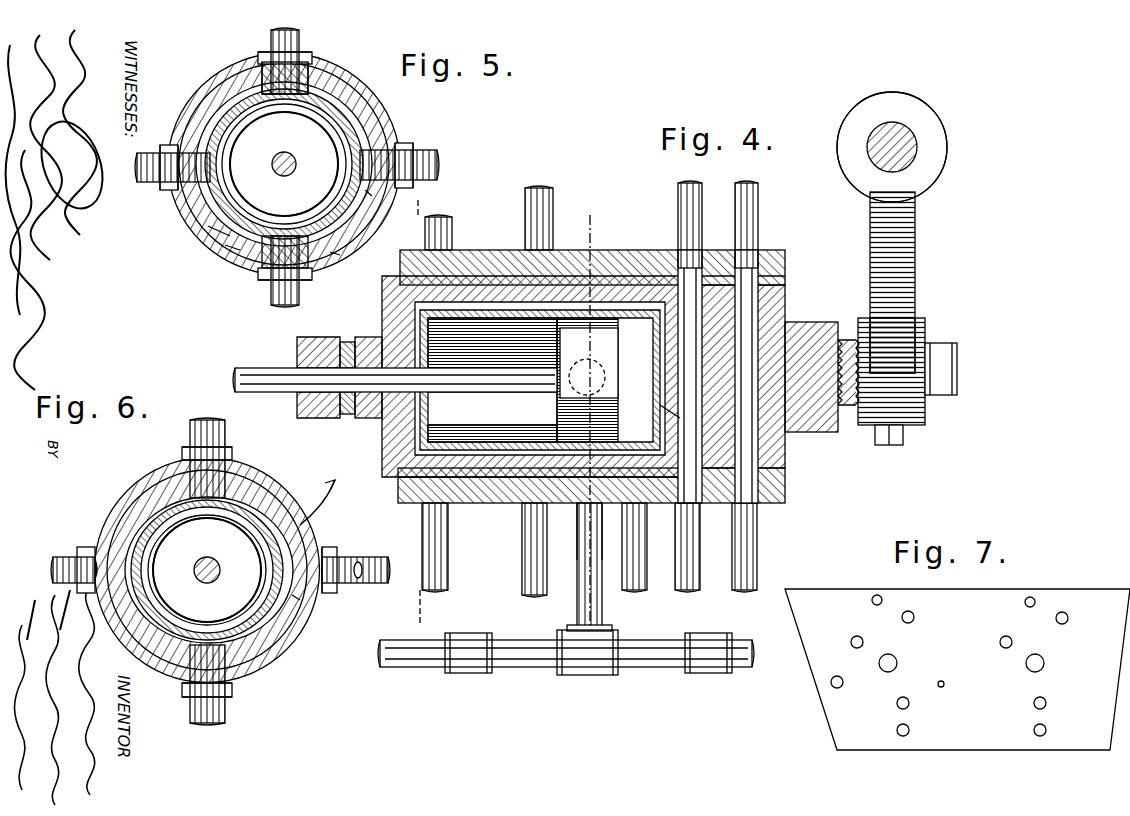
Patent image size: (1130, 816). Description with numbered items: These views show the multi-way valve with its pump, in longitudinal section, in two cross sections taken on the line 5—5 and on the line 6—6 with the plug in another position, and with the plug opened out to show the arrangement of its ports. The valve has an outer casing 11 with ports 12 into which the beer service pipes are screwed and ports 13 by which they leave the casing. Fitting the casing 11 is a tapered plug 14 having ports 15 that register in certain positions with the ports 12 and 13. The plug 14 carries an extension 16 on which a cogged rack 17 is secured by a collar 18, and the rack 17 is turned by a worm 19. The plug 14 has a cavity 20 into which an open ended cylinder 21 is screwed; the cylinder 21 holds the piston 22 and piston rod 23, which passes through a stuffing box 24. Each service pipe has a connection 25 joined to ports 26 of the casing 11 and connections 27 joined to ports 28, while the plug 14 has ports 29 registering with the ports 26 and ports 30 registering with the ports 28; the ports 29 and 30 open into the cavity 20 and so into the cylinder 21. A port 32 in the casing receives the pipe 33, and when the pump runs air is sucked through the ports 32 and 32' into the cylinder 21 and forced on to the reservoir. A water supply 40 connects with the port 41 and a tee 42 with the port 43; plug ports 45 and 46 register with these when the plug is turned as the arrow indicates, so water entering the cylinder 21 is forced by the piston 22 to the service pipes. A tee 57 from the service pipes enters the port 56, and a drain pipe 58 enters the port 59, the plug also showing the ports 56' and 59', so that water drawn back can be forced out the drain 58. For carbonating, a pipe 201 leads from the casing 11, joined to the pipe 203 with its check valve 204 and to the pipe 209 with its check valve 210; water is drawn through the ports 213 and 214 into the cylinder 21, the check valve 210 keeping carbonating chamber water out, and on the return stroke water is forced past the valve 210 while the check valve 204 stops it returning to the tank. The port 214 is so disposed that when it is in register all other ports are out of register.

In FIG. 4, the section line 5 is at (420, 200).
In FIG. 4, the section line 6 is at (590, 215).
In FIG. 5, the outer casing 11 is at (340, 255).
In FIG. 4, the outer casing 11 is at (780, 482).
In FIG. 6, the ports 12 is at (65, 558).
In FIG. 4, the ports 12 is at (690, 200).
In FIG. 4, the ports 13 is at (745, 258).
In FIG. 5, the tapered plug 14 is at (220, 88).
In FIG. 6, the tapered plug 14 is at (160, 490).
In FIG. 4, the tapered plug 14 is at (770, 320).
In FIG. 7, the tapered plug 14 is at (1115, 612).
In FIG. 4, the ports 15 is at (745, 300).
In FIG. 7, the ports 15 is at (912, 726).
In FIG. 4, the extension 16 is at (935, 345).
In FIG. 4, the cogged rack 17 is at (912, 292).
In FIG. 4, the collar 18 is at (905, 432).
In FIG. 4, the worm 19 is at (885, 100).
In FIG. 5, the cavity 20 is at (225, 245).
In FIG. 4, the cavity 20 is at (475, 408).
In FIG. 4, the open ended cylinder 21 is at (505, 445).
In FIG. 5, the piston 22 is at (285, 180).
In FIG. 6, the piston 22 is at (208, 586).
In FIG. 4, the piston 22 is at (592, 362).
In FIG. 5, the piston rod 23 is at (287, 152).
In FIG. 6, the piston rod 23 is at (208, 557).
In FIG. 4, the piston rod 23 is at (452, 390).
In FIG. 4, the stuffing box 24 is at (318, 340).
In FIG. 5, the connection 25 is at (165, 178).
In FIG. 4, the connection 25 is at (525, 222).
In FIG. 5, the ports 26 is at (175, 148).
In FIG. 4, the ports 26 is at (525, 238).
In FIG. 5, the connections 27 is at (430, 160).
In FIG. 4, the connections 27 is at (448, 515).
In FIG. 5, the ports 28 is at (405, 148).
In FIG. 4, the ports 28 is at (398, 495).
In FIG. 5, the ports 29 is at (200, 125).
In FIG. 7, the ports 29 is at (872, 601).
In FIG. 5, the ports 30 is at (372, 196).
In FIG. 7, the ports 30 is at (1046, 602).
In FIG. 6, the port 32 is at (341, 578).
In FIG. 4, the port 32 is at (644, 547).
In FIG. 6, the port 32' is at (325, 616).
In FIG. 4, the port 32' is at (687, 410).
In FIG. 7, the port 32' is at (958, 691).
In FIG. 6, the pipe 33 is at (345, 558).
In FIG. 4, the pipe 33 is at (640, 592).
In FIG. 6, the water supply 40 is at (225, 715).
In FIG. 4, the water supply 40 is at (572, 385).
In FIG. 6, the port 41 is at (232, 690).
In FIG. 6, the tee 42 is at (190, 430).
In FIG. 6, the port 43 is at (228, 460).
In FIG. 6, the port 45 is at (260, 665).
In FIG. 7, the port 45 is at (1044, 663).
In FIG. 5, the port 46 is at (310, 76).
In FIG. 6, the port 46 is at (225, 480).
In FIG. 7, the port 46 is at (897, 662).
In FIG. 5, the port 56 is at (312, 47).
In FIG. 5, the port 56' is at (406, 144).
In FIG. 7, the port 56' is at (995, 653).
In FIG. 5, the tee 57 is at (268, 40).
In FIG. 5, the drain pipe 58 is at (300, 286).
In FIG. 4, the drain pipe 58 is at (490, 388).
In FIG. 5, the port 59 is at (266, 287).
In FIG. 7, the port 59 is at (847, 651).
In FIG. 5, the port 59' is at (193, 238).
In FIG. 4, the pipe 201 is at (577, 598).
In FIG. 4, the pipe 203 is at (745, 648).
In FIG. 4, the check valve 204 is at (705, 638).
In FIG. 4, the pipe 209 is at (412, 670).
In FIG. 4, the check valve 210 is at (462, 638).
In FIG. 4, the port 213 is at (582, 540).
In FIG. 4, the port 214 is at (580, 512).
In FIG. 7, the port 214 is at (842, 687).